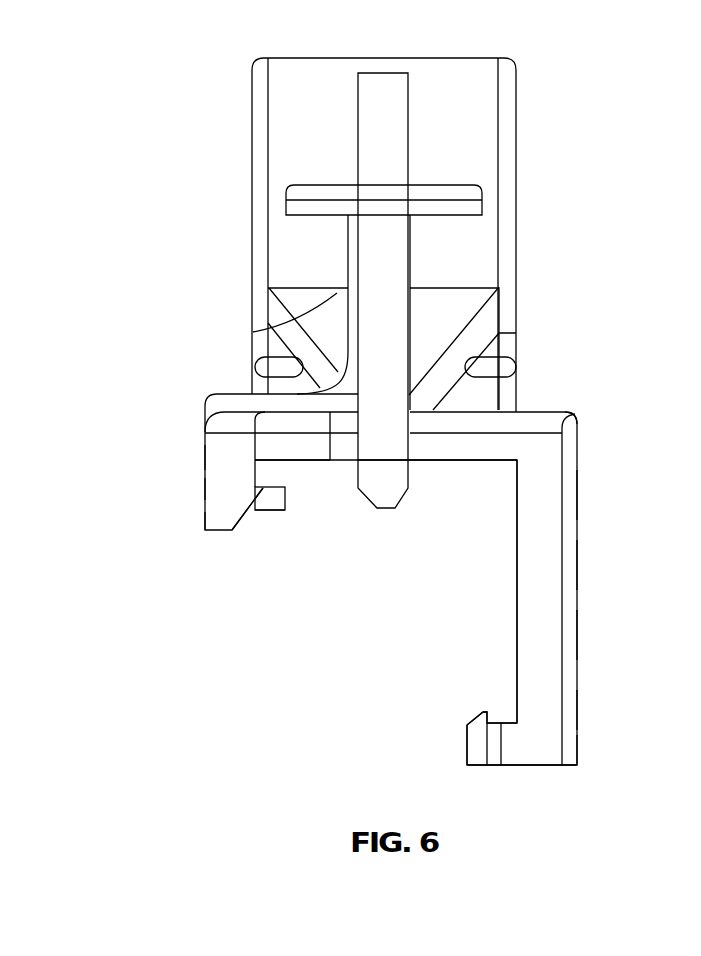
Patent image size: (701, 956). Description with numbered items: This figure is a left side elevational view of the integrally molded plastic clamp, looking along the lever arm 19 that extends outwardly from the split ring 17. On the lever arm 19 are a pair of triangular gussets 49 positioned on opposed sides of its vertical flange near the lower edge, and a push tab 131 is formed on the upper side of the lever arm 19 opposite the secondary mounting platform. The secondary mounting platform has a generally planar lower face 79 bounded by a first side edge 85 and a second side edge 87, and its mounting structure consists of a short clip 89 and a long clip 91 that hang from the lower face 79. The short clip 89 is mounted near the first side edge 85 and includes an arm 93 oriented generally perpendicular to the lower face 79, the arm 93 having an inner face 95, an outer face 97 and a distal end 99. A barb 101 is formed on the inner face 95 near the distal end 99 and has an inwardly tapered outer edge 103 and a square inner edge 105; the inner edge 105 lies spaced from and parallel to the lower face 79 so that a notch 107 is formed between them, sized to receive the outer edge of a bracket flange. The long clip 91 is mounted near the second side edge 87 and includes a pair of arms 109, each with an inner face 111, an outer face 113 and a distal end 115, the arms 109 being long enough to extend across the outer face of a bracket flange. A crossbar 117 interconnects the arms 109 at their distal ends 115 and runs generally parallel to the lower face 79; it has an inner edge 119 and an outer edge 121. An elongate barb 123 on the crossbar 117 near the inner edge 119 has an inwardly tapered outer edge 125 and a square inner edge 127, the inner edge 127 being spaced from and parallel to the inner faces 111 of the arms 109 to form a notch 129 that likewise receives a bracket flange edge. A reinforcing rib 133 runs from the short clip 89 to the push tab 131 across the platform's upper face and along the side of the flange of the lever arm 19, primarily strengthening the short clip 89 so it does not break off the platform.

The split ring 17 is at (457, 58).
The lever arm 19 is at (357, 120).
The push tab 131 is at (417, 184).
The triangular gussets 49 is at (312, 292).
The reinforcing rib 133 is at (253, 332).
The inner face 95 is at (262, 465).
The first side edge 85 is at (206, 440).
The second side edge 87 is at (572, 443).
The short clip 89 is at (206, 457).
The arm 93 is at (206, 490).
The outer face 97 is at (206, 525).
The distal end 99 is at (218, 533).
The notch 107 is at (262, 475).
The square inner edge 105 is at (262, 488).
The barb 101 is at (265, 490).
The inwardly tapered outer edge 103 is at (253, 508).
The lower face 79 is at (470, 460).
The outer face 113 is at (580, 500).
The long clip 91 is at (580, 567).
The arms 109 is at (580, 638).
The inner face 111 is at (515, 592).
The notch 129 is at (512, 718).
The square inner edge 127 is at (485, 712).
The elongate barb 123 is at (482, 715).
The inwardly tapered outer edge 125 is at (477, 718).
The inner edge 119 is at (467, 747).
The crossbar 117 is at (532, 767).
The distal end 115 is at (580, 720).
The outer edge 121 is at (580, 742).